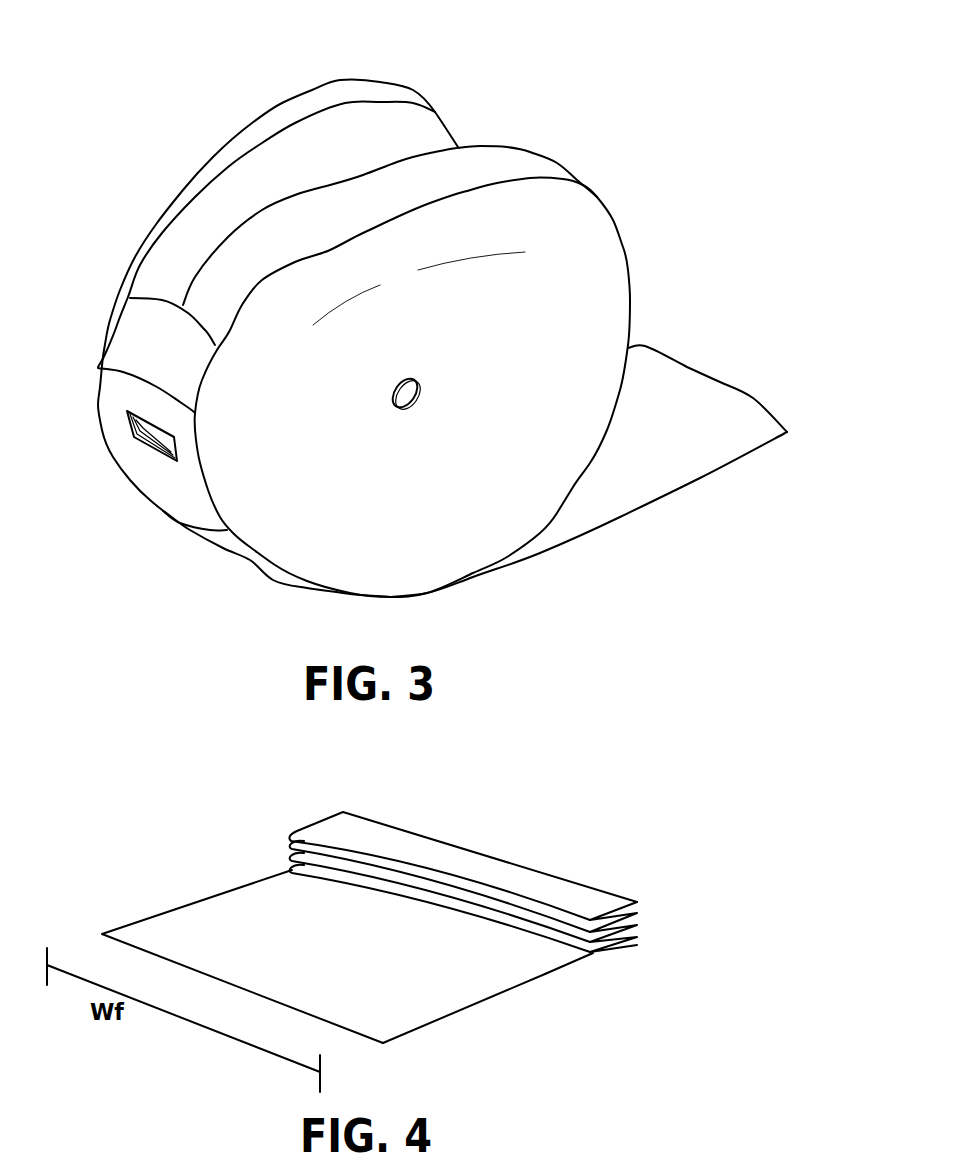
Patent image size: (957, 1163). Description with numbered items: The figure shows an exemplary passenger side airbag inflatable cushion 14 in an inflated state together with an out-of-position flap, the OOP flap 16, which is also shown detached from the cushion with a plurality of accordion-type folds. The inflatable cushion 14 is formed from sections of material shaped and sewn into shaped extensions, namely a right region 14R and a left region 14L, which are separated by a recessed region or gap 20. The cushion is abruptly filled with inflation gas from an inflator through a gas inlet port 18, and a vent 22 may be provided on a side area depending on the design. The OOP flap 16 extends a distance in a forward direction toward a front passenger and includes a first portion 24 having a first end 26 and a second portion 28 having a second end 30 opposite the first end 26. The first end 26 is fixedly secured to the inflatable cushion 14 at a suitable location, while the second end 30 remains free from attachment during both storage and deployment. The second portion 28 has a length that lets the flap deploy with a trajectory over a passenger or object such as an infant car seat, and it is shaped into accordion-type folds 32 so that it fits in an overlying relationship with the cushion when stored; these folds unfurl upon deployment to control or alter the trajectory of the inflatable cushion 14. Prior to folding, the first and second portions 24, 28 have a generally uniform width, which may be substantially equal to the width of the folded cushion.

In FIG. 3, the inflatable cushion 14 is at (369, 308).
In FIG. 3, the right region 14R is at (277, 128).
In FIG. 3, the left region 14L is at (613, 273).
In FIG. 3, the OOP flap 16 is at (457, 459).
In FIG. 4, the OOP flap 16 is at (401, 923).
In FIG. 3, the gas inlet port 18 is at (140, 443).
In FIG. 3, the gap 20 is at (470, 123).
In FIG. 3, the vent 22 is at (419, 388).
In FIG. 3, the first portion 24 is at (286, 576).
In FIG. 4, the first portion 24 is at (432, 1029).
In FIG. 3, the first end 26 is at (212, 533).
In FIG. 4, the first end 26 is at (230, 985).
In FIG. 3, the second portion 28 is at (708, 462).
In FIG. 4, the second portion 28 is at (566, 976).
In FIG. 3, the second end 30 is at (752, 412).
In FIG. 4, the second end 30 is at (462, 842).
In FIG. 4, the accordion-type folds 32 is at (648, 902).